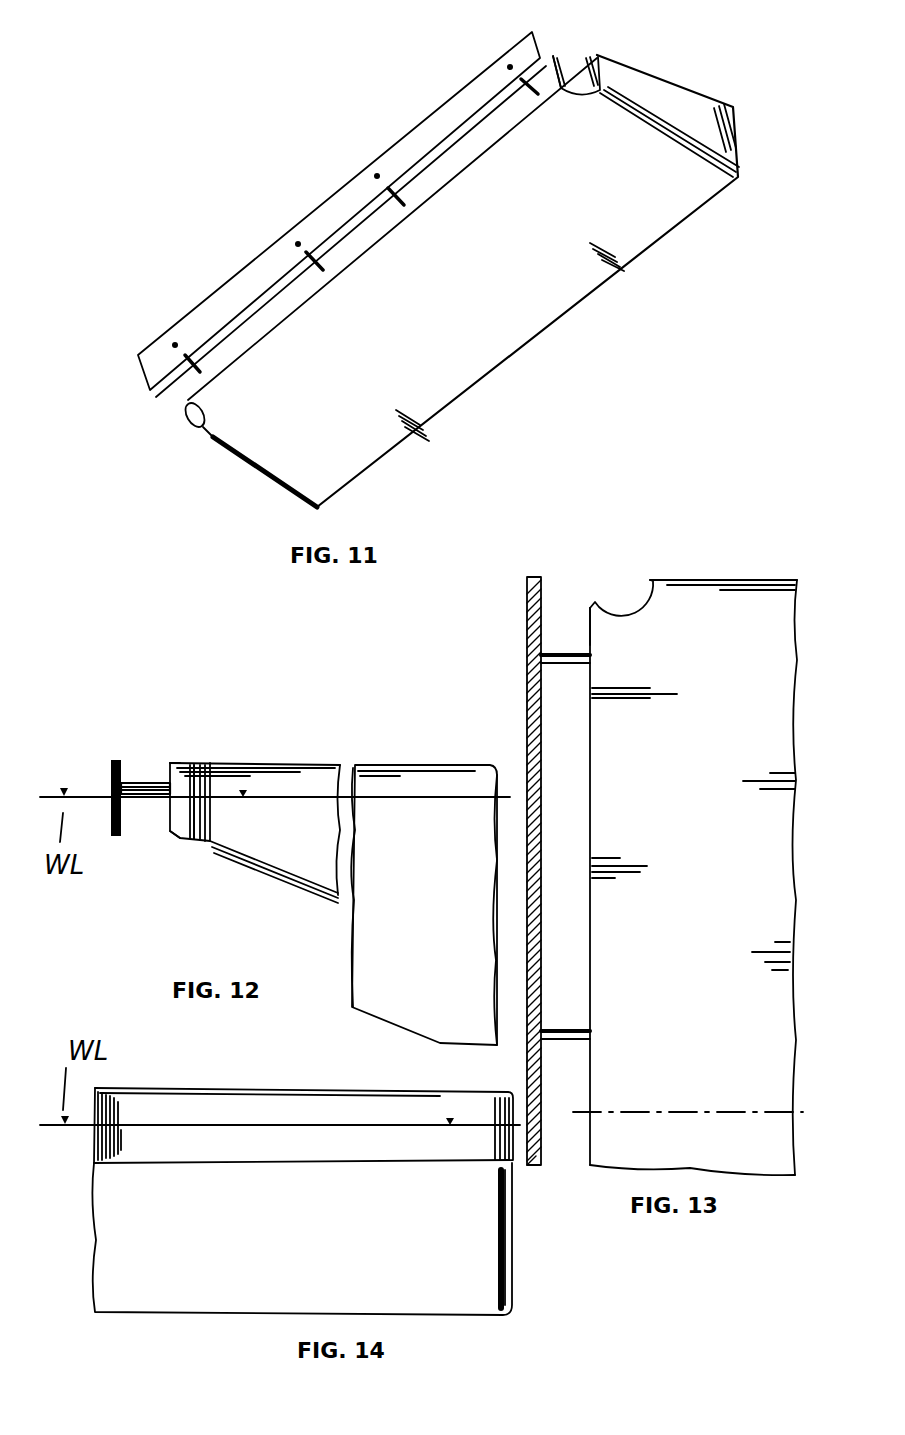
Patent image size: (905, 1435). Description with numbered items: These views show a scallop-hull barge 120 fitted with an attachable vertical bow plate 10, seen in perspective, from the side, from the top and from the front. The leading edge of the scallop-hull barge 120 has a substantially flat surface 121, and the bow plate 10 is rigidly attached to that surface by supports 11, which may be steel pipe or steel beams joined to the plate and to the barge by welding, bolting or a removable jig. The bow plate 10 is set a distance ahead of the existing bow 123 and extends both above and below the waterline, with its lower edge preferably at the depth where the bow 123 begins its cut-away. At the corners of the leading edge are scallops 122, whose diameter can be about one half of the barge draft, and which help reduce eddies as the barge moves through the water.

In FIG. 11, the bow plate 10 is at (330, 205).
In FIG. 12, the bow plate 10 is at (133, 766).
In FIG. 13, the bow plate 10 is at (527, 652).
In FIG. 14, the bow plate 10 is at (213, 1087).
In FIG. 11, the supports 11 is at (393, 193).
In FIG. 12, the supports 11 is at (147, 778).
In FIG. 13, the supports 11 is at (558, 672).
In FIG. 11, the scallop-hull barge 120 is at (255, 472).
In FIG. 12, the scallop-hull barge 120 is at (290, 757).
In FIG. 13, the scallop-hull barge 120 is at (735, 577).
In FIG. 14, the scallop-hull barge 120 is at (512, 1249).
In FIG. 11, the substantially flat surface 121 is at (178, 377).
In FIG. 12, the substantially flat surface 121 is at (168, 820).
In FIG. 13, the substantially flat surface 121 is at (590, 631).
In FIG. 11, the scallops 122 is at (188, 430).
In FIG. 12, the scallops 122 is at (191, 832).
In FIG. 13, the scallops 122 is at (626, 601).
In FIG. 11, the bow 123 is at (552, 60).
In FIG. 12, the bow 123 is at (166, 813).
In FIG. 14, the bow 123 is at (517, 1201).